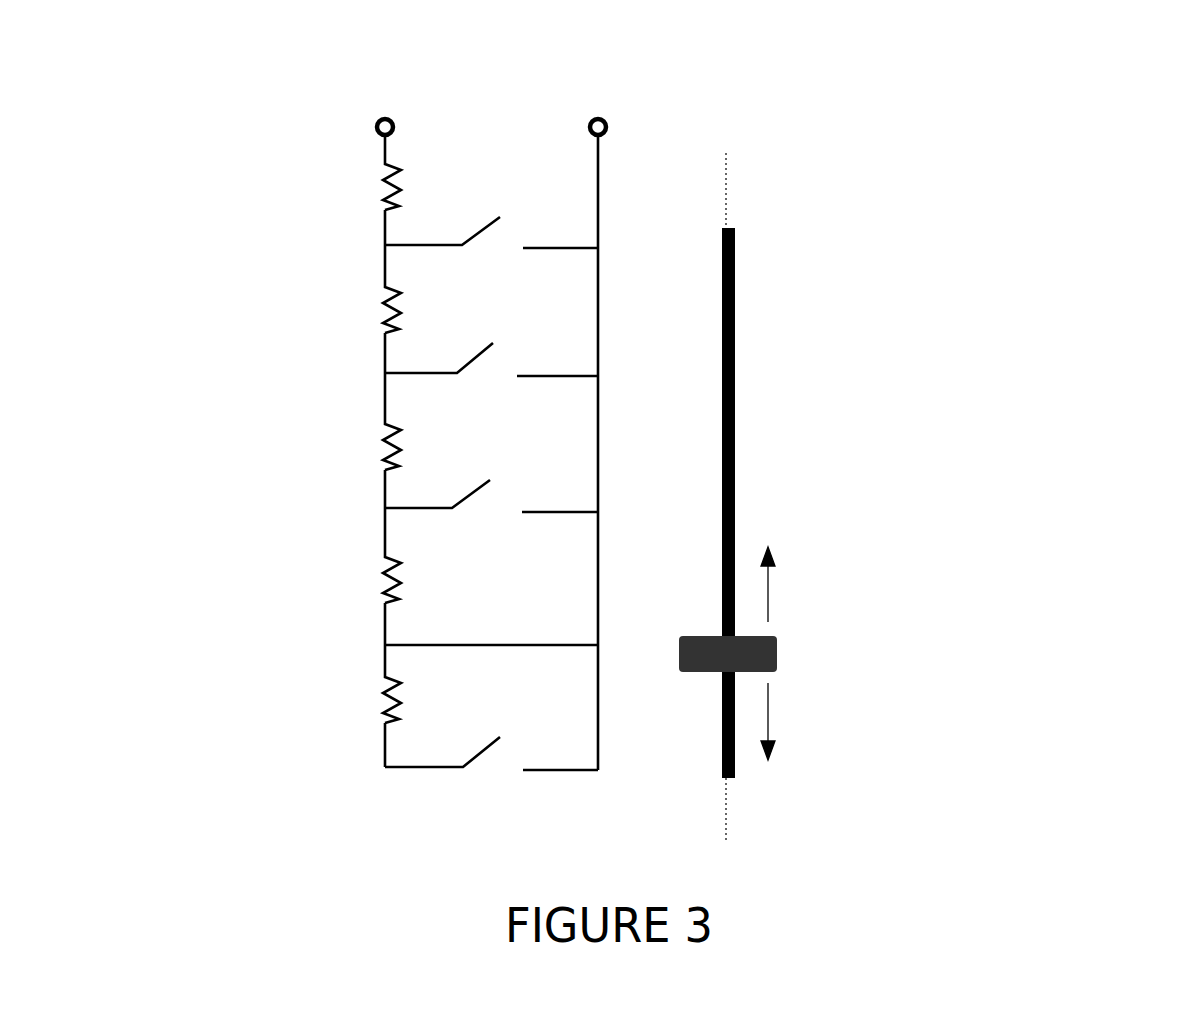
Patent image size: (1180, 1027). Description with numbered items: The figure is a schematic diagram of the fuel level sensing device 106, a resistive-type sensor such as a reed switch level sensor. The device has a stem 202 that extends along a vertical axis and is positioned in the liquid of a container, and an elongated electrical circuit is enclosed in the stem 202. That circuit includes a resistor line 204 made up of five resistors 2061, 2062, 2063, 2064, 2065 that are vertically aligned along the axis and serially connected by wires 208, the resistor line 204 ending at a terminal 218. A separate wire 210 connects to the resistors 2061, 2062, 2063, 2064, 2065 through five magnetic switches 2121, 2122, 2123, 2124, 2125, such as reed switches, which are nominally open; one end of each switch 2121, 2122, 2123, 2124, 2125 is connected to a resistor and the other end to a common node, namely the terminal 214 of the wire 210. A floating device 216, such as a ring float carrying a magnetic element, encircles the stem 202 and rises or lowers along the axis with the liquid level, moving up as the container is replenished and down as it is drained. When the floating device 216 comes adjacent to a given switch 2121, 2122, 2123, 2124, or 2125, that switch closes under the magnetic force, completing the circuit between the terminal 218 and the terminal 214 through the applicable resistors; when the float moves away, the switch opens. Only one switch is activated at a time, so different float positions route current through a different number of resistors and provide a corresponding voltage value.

The fuel level sensing device 106 is at (1052, 74).
The stem 202 is at (729, 280).
The resistor line 204 is at (355, 780).
The resistor 2061 is at (372, 690).
The resistor 2062 is at (380, 568).
The resistor 2063 is at (378, 437).
The resistor 2064 is at (377, 305).
The resistor 2065 is at (377, 185).
The wires 208 is at (385, 266).
The wire 210 is at (600, 192).
The magnetic switch 2121 is at (477, 737).
The magnetic switch 2122 is at (475, 642).
The magnetic switch 2123 is at (477, 465).
The magnetic switch 2124 is at (477, 342).
The magnetic switch 2125 is at (483, 218).
The terminal 214 is at (601, 118).
The floating device 216 is at (687, 663).
The terminal 218 is at (386, 118).